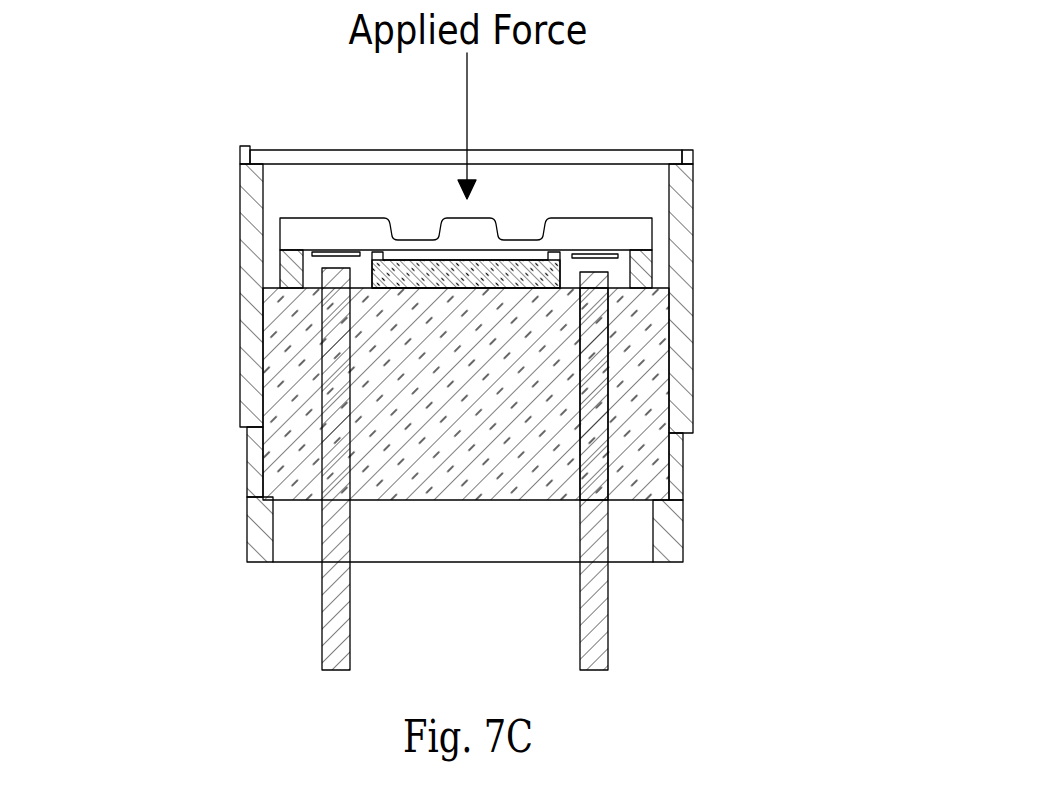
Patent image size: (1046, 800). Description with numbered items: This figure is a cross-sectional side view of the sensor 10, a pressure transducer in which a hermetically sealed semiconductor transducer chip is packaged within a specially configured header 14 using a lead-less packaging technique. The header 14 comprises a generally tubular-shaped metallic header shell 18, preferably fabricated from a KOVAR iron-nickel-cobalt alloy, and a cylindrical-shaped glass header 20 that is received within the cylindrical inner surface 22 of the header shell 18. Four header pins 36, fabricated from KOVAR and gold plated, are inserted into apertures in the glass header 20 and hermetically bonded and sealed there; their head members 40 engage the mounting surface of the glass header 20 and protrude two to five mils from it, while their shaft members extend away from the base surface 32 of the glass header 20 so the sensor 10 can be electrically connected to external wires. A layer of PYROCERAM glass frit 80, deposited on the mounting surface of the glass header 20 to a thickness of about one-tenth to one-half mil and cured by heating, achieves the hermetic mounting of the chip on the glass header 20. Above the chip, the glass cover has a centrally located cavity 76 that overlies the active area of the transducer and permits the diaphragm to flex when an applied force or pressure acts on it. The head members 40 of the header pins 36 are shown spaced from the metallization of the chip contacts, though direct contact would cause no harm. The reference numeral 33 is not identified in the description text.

The sensor 10 is at (204, 213).
The header 14 is at (693, 187).
The header shell 18 is at (686, 232).
The glass header 20 is at (669, 368).
The cylindrical inner surface 22 is at (669, 188).
The base surface 32 is at (420, 500).
The pin seal 33 is at (598, 377).
The header pins 36 is at (348, 627).
The head member 40 is at (656, 263).
The cavity 76 is at (488, 288).
The glass frit 80 is at (380, 288).